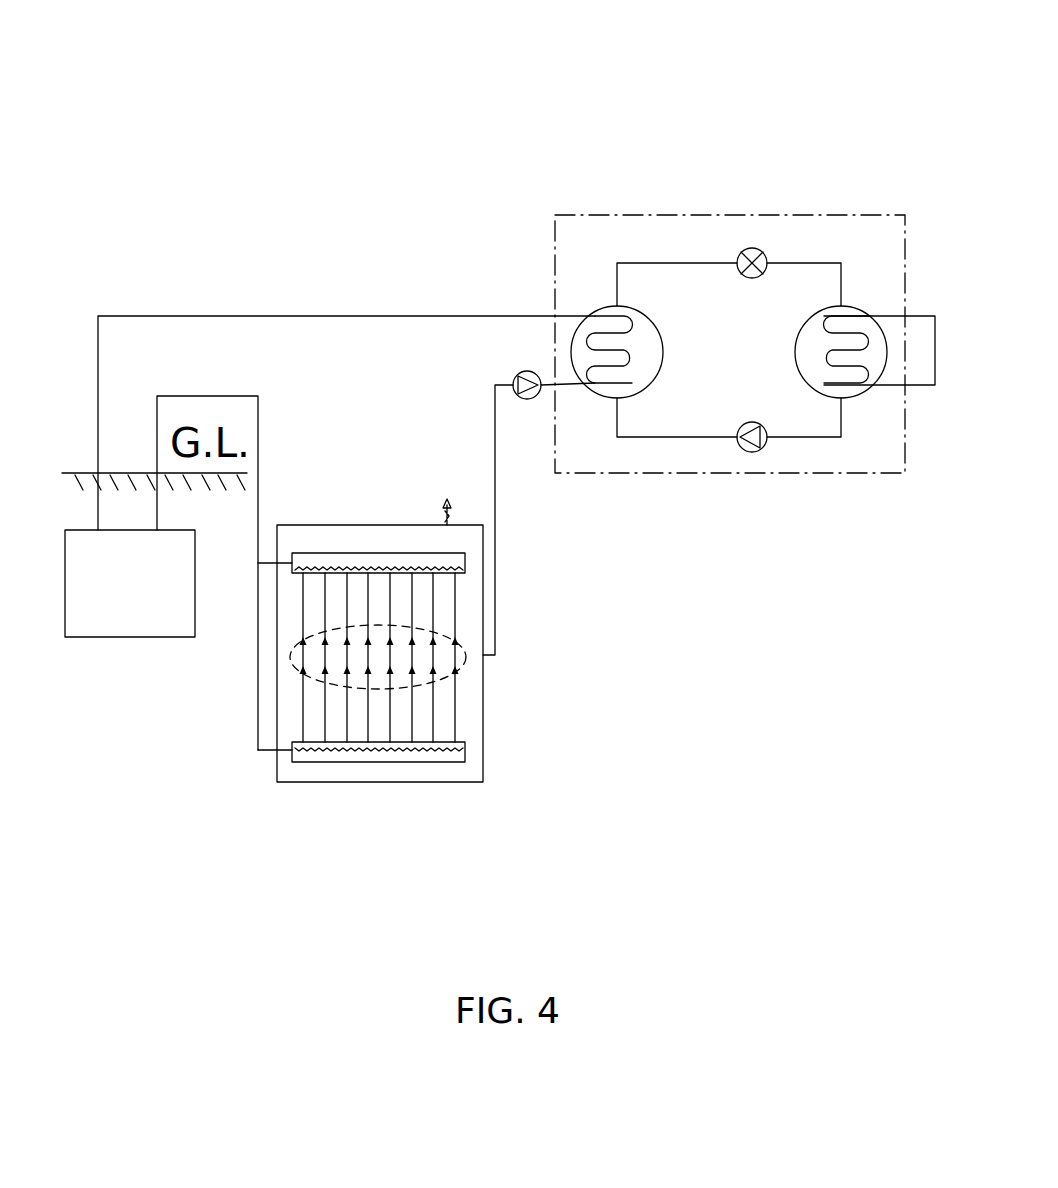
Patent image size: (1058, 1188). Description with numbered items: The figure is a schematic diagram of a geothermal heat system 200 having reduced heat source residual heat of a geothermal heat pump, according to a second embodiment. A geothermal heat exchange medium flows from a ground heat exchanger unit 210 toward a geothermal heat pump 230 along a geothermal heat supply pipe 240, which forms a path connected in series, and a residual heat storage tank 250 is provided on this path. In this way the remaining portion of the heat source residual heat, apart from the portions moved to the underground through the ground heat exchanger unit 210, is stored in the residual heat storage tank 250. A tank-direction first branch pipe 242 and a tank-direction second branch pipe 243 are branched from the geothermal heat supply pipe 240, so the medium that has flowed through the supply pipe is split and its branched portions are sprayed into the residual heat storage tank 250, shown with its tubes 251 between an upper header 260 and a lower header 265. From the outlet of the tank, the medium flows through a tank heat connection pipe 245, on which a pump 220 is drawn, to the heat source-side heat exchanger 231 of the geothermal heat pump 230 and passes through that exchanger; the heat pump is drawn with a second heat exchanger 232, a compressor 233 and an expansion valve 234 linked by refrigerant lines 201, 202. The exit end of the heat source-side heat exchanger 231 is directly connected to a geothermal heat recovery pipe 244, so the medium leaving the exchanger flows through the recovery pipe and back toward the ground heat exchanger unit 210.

The geothermal heat exchange system 200 is at (166, 60).
The first pipe 201 is at (922, 385).
The second pipe 202 is at (887, 316).
The ground heat exchanger unit 210 is at (118, 615).
The circulation pump 220 is at (526, 371).
The geothermal heat pump 230 is at (928, 592).
The heat source-side heat exchanger 231 is at (602, 397).
The second heat exchanger 232 is at (850, 397).
The compressor 233 is at (753, 453).
The expansion valve 234 is at (750, 280).
The geothermal heat supply pipe 240 is at (255, 396).
The tank-direction first branch pipe 242 is at (270, 563).
The tank-direction second branch pipe 243 is at (265, 753).
The geothermal heat recovery pipe 244 is at (149, 316).
The tank heat connection pipe 245 is at (493, 427).
The residual heat storage tank 250 is at (302, 782).
The heat exchange tube 251 is at (367, 688).
The upper header 260 is at (440, 573).
The lower header 265 is at (402, 762).